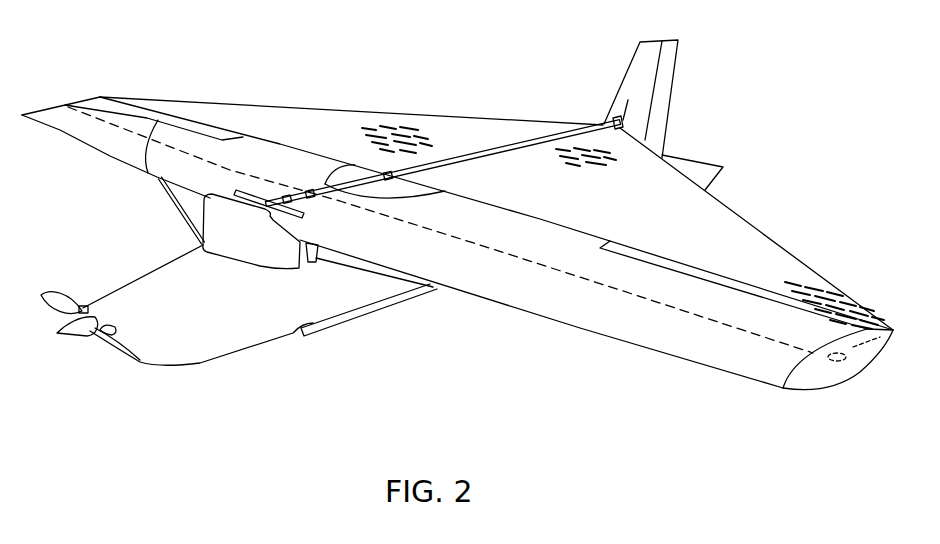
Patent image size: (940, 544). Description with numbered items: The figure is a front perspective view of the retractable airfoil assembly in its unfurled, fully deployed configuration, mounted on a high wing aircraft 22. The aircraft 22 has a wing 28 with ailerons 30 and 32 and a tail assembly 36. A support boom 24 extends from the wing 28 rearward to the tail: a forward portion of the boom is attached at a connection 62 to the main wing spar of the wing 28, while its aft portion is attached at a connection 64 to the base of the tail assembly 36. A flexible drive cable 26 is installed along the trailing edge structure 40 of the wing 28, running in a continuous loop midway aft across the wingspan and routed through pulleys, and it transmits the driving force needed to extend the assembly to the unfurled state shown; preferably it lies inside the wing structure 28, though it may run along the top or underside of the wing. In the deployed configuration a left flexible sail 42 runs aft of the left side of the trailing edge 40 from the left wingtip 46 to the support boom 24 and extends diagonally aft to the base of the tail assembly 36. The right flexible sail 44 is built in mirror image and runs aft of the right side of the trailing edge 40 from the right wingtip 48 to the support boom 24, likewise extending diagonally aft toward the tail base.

The high wing aircraft 22 is at (286, 54).
The support boom 24 is at (470, 158).
The flexible drive cable 26 is at (107, 122).
The wing 28 is at (557, 294).
The aileron 30 is at (720, 284).
The aileron 32 is at (147, 170).
The tail assembly 36 is at (611, 93).
The trailing edge structure 40 is at (265, 139).
The left flexible sail 42 is at (745, 242).
The right flexible sail 44 is at (412, 120).
The left wingtip 46 is at (895, 337).
The right wingtip 48 is at (108, 97).
The connection 62 is at (272, 194).
The connection 64 is at (623, 122).